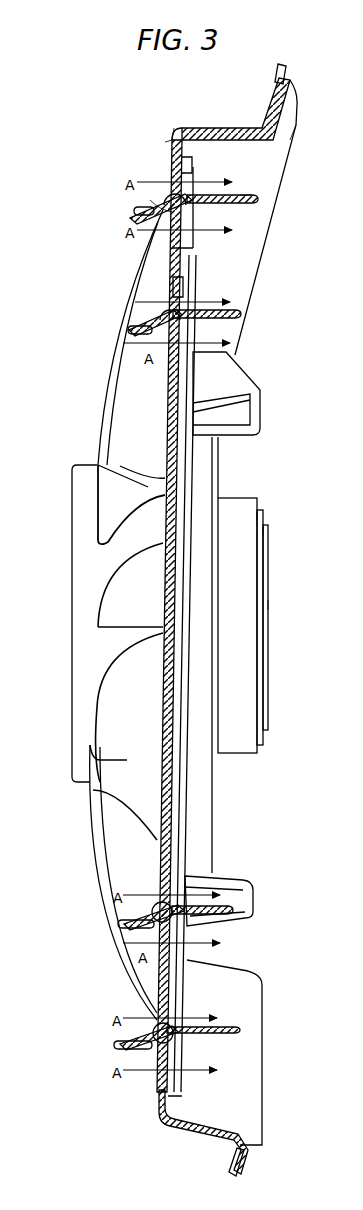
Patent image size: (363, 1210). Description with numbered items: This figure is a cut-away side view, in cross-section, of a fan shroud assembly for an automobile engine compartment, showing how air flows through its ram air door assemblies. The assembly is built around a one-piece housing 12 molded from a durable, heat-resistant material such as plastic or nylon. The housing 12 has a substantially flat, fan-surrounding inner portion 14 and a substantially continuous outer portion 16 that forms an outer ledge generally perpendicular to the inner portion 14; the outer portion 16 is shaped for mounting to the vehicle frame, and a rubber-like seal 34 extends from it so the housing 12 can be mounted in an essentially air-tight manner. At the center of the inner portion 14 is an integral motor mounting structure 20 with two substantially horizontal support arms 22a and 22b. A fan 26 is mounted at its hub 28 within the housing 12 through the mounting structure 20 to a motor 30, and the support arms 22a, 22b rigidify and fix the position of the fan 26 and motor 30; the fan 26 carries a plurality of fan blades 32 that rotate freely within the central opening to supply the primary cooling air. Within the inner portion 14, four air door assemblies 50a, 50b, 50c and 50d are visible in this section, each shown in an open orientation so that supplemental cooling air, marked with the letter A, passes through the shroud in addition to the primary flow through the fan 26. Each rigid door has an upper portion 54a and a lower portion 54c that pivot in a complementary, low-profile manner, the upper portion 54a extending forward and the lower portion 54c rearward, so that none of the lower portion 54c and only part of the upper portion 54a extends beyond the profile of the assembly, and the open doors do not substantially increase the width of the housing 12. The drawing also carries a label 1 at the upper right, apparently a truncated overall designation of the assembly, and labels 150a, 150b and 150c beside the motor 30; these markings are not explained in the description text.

The fan assembly 1 is at (320, 198).
The housing 12 is at (165, 135).
The inner portion 14 is at (175, 162).
The outer portion 16 is at (207, 128).
The motor mounting structure 20 is at (275, 439).
The support arm 22a is at (262, 402).
The support arm 22b is at (258, 897).
The fan 26 is at (110, 330).
The hub 28 is at (72, 612).
The motor 30 is at (240, 625).
The fan blades 32 is at (105, 410).
The seal 34 is at (285, 70).
The air door assembly 50a is at (125, 212).
The air door assembly 50b is at (248, 325).
The air door assembly 50c is at (240, 920).
The air door assembly 50d is at (240, 1040).
The upper portion of door 54a is at (150, 200).
The lower portion of door 54c is at (240, 205).
The hub step 150a is at (309, 495).
The hub step 150b is at (313, 542).
The hub step 150c is at (362, 636).